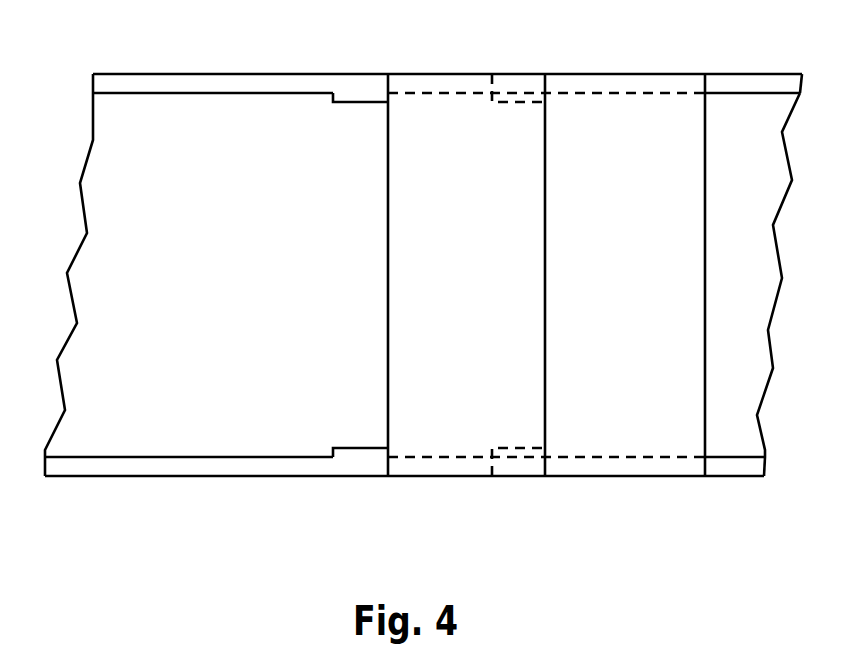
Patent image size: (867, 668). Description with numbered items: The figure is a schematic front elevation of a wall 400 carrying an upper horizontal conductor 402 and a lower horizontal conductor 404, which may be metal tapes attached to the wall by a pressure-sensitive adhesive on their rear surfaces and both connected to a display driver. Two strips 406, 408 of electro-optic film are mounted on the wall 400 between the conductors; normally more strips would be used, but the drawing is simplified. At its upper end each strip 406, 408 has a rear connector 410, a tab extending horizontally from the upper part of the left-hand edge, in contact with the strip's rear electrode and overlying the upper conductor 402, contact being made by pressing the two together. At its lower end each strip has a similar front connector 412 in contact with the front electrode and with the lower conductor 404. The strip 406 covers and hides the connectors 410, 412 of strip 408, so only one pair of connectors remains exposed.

The wall 400 is at (229, 250).
The upper horizontal conductor 402 is at (192, 78).
The lower horizontal conductor 404 is at (137, 465).
The strip of film 406 is at (497, 249).
The strip of film 408 is at (655, 249).
The rear connector 410 is at (353, 88).
The front connector 412 is at (353, 458).